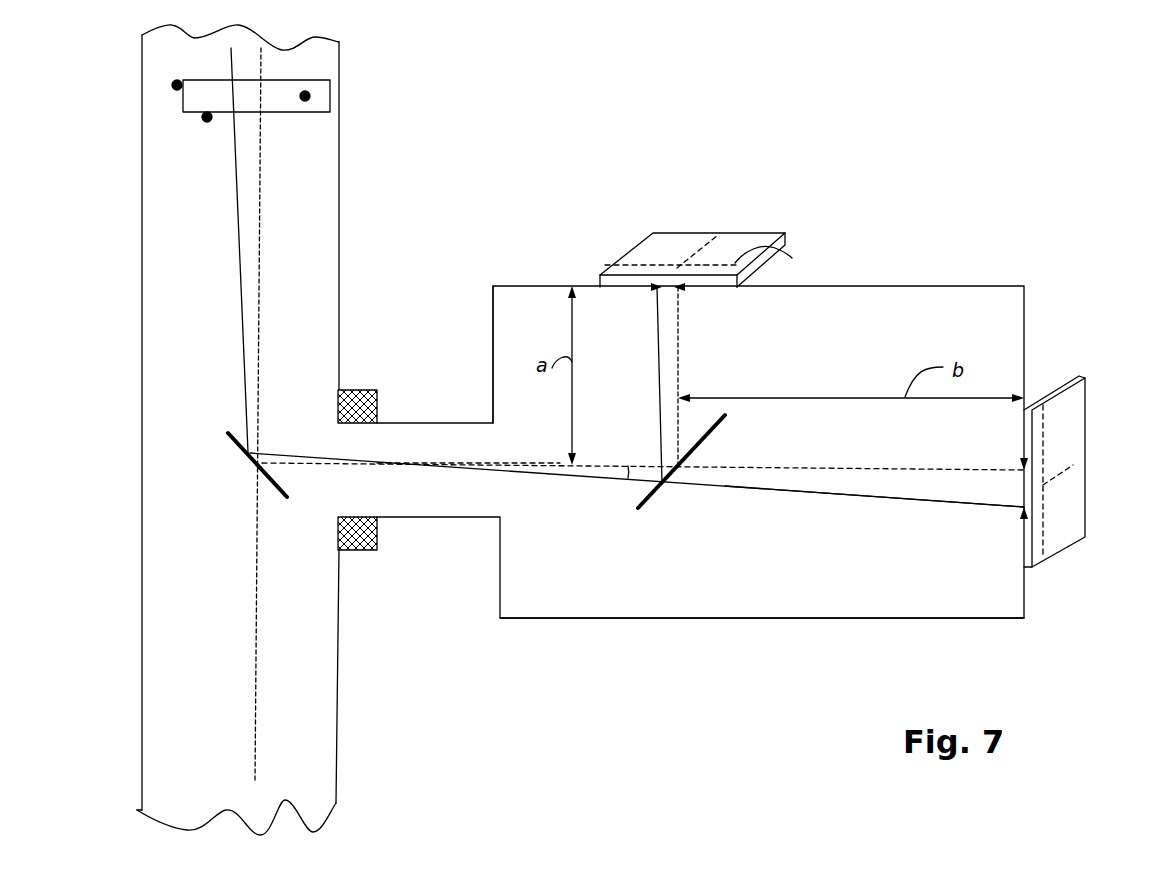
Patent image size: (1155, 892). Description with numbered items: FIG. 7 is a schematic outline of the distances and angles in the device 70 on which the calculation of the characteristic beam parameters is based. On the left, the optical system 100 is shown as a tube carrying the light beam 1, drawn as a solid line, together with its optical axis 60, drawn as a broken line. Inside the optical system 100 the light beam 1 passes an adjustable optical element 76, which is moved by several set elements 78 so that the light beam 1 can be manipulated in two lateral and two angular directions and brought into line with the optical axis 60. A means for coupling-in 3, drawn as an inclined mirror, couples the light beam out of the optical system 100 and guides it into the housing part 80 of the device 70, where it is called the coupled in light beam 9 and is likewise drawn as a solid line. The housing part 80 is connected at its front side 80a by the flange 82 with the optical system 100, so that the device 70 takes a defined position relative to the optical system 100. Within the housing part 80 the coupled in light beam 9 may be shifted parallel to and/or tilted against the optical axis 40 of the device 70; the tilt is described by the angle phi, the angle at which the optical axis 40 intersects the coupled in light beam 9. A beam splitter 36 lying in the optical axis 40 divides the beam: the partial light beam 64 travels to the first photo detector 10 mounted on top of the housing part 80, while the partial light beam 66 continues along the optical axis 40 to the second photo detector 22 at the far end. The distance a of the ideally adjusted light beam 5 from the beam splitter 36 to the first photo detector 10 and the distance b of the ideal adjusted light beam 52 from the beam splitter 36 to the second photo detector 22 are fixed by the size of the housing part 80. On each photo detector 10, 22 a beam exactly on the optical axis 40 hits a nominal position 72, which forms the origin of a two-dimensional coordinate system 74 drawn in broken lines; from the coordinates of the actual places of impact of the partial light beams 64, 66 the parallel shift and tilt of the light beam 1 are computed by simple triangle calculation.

The light beam 1 is at (238, 216).
The means for coupling-in 3 is at (232, 443).
The ideally adjusted light beam 5 is at (680, 336).
The coupled in light beam 9 is at (515, 473).
The first photo detector 10 is at (648, 245).
The second photo detector 22 is at (1078, 412).
The beam splitter 36 is at (648, 502).
The optical axis 40 is at (537, 465).
The ideal adjusted light beam 52 is at (782, 468).
The optical axis 60 is at (262, 155).
The partial light beam 64 is at (658, 355).
The partial light beam 66 is at (850, 497).
The device 70 is at (838, 634).
The nominal position 72 is at (703, 265).
The 2-dimensional coordinate system 74 is at (779, 257).
The optical element 76 is at (321, 93).
The set elements 78 is at (175, 89).
The housing part 80 is at (639, 618).
The front side 80a is at (493, 325).
The flange 82 is at (360, 396).
The optical system 100 is at (340, 268).